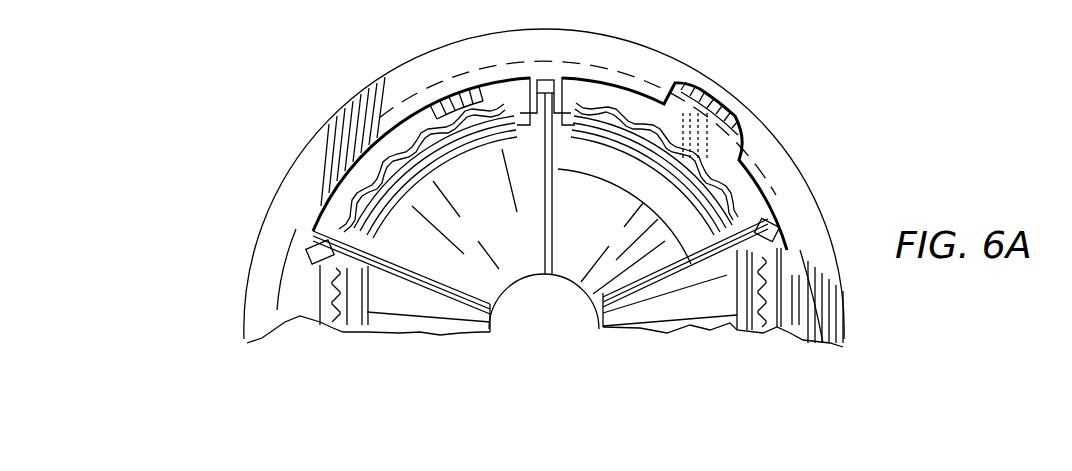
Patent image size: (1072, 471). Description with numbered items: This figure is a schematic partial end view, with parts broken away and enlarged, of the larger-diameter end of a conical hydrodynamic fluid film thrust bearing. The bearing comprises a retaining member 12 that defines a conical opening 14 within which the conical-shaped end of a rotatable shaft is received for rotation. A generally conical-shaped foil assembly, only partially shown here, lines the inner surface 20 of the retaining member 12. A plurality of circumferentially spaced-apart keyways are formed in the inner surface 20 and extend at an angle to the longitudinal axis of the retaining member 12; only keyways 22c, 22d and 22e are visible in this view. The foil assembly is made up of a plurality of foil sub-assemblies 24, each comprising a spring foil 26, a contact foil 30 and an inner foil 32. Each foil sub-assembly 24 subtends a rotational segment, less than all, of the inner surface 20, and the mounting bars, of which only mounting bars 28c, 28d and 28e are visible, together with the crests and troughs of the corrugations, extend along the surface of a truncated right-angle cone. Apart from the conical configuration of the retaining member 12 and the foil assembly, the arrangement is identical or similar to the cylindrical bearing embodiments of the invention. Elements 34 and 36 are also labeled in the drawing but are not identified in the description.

The retaining member 12 is at (738, 80).
The conical opening 14 is at (563, 306).
The inner surface 20 is at (645, 103).
The keyway 22c is at (773, 221).
The keyway 22d is at (585, 112).
The keyway 22e is at (320, 238).
The foil sub-assembly 24 is at (643, 202).
The spring foil 26 is at (413, 143).
The mounting bar 28c is at (760, 227).
The mounting bar 28d is at (543, 80).
The mounting bar 28e is at (317, 250).
The contact foil 30 is at (411, 178).
The inner foil 32 is at (508, 201).
The block 34 is at (483, 100).
The outer wall 36 is at (787, 167).